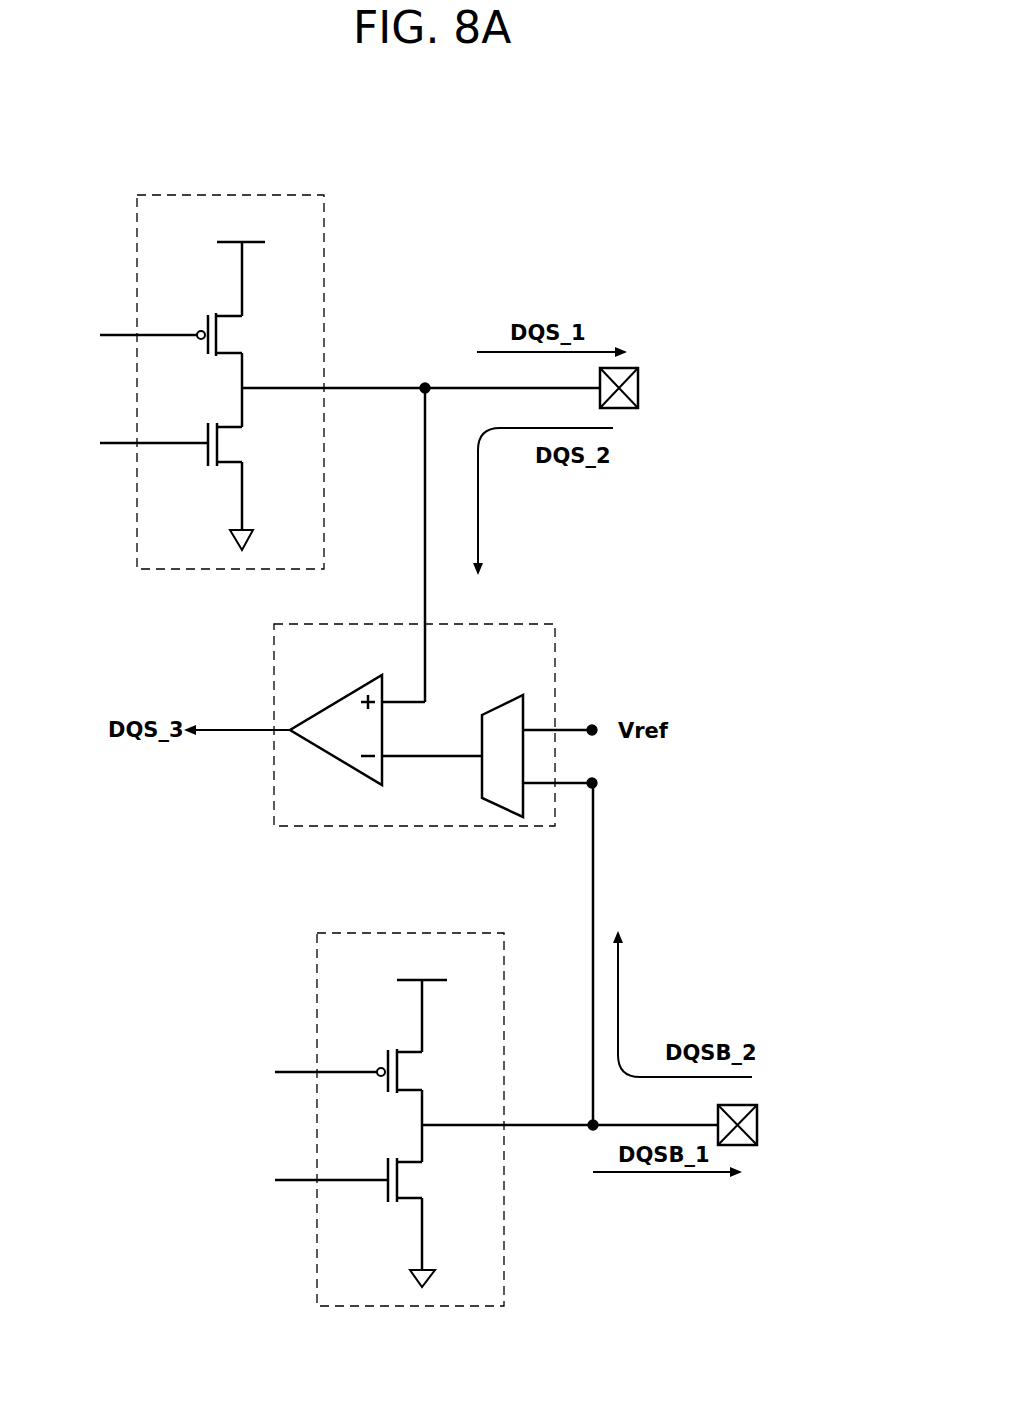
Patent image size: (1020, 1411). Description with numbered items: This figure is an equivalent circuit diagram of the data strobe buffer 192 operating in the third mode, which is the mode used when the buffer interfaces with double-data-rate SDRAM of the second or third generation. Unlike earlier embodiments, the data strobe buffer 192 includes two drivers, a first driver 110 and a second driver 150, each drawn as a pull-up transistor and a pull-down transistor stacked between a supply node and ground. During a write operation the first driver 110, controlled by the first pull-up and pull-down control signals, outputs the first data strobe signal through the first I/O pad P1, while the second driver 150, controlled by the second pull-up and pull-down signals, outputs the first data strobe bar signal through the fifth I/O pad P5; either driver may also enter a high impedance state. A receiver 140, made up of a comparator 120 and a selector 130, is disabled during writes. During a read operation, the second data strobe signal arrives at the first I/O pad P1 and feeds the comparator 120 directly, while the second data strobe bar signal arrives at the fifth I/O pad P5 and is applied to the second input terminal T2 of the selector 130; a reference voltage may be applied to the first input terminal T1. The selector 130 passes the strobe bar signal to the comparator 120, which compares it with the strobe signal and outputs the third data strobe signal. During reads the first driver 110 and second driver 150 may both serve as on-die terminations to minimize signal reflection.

The first driver 110 is at (296, 195).
The comparator 120 is at (341, 694).
The selector 130 is at (497, 706).
The receiver 140 is at (518, 624).
The second driver 150 is at (467, 933).
The data strobe buffer 192 is at (640, 142).
The first I/O pad P1 is at (638, 388).
The fifth I/O pad P5 is at (757, 1125).
The first input terminal T1 is at (564, 714).
The second input terminal T2 is at (564, 768).